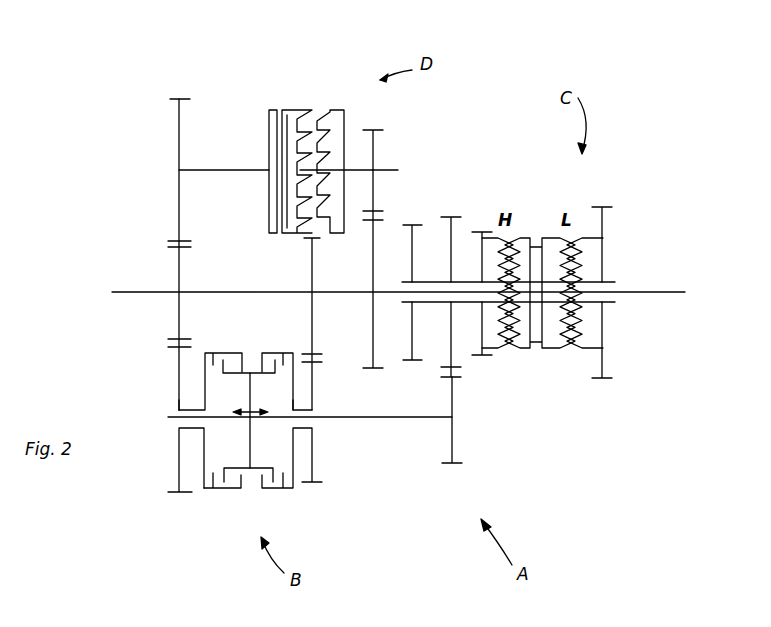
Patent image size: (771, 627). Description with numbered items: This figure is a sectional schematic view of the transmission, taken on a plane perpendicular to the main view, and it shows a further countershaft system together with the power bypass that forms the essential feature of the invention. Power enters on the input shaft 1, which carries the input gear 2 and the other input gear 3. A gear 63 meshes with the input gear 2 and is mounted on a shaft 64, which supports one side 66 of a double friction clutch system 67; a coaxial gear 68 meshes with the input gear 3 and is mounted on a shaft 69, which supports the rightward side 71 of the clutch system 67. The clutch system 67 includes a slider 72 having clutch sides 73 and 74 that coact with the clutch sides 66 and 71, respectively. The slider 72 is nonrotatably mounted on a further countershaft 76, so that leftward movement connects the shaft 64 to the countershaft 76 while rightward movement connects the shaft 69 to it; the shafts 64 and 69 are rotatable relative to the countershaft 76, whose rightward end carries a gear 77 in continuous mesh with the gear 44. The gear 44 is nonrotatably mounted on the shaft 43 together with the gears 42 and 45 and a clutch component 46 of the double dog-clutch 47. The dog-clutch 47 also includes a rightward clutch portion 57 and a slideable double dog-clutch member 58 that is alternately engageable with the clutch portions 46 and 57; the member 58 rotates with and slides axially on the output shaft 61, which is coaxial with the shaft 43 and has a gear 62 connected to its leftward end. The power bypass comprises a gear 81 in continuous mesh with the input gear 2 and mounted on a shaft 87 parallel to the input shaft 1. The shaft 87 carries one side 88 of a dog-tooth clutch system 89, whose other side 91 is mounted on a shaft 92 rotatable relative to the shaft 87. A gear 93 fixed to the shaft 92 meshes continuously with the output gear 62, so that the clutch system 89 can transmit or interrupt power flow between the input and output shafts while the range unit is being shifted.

The input shaft 1 is at (135, 292).
The input gear 2 is at (183, 277).
The input gear 3 is at (306, 261).
The gear 42 is at (412, 258).
The shaft 43 is at (437, 302).
The gear 44 is at (450, 252).
The gear 45 is at (482, 256).
The clutch component 46 is at (496, 348).
The double dog-clutch 47 is at (542, 279).
The rightward clutch portion 57 is at (587, 348).
The double dog-clutch member 58 is at (548, 348).
The output shaft 61 is at (658, 290).
The gear 62 is at (372, 250).
The gear 63 is at (178, 486).
The shaft 64 is at (183, 406).
The clutch side 66 is at (221, 353).
The double friction clutch system 67 is at (258, 491).
The gear 68 is at (312, 470).
The shaft 69 is at (300, 410).
The rightward clutch side 71 is at (288, 353).
The slider 72 is at (268, 400).
The clutch side 73 is at (222, 373).
The clutch side 74 is at (278, 478).
The countershaft 76 is at (378, 418).
The gear 77 is at (454, 443).
The gear 81 is at (179, 104).
The shaft 87 is at (238, 168).
The clutch side 88 is at (292, 110).
The dog-tooth clutch system 89 is at (315, 131).
The clutch side 91 is at (318, 101).
The shaft 92 is at (364, 168).
The gear 93 is at (374, 150).